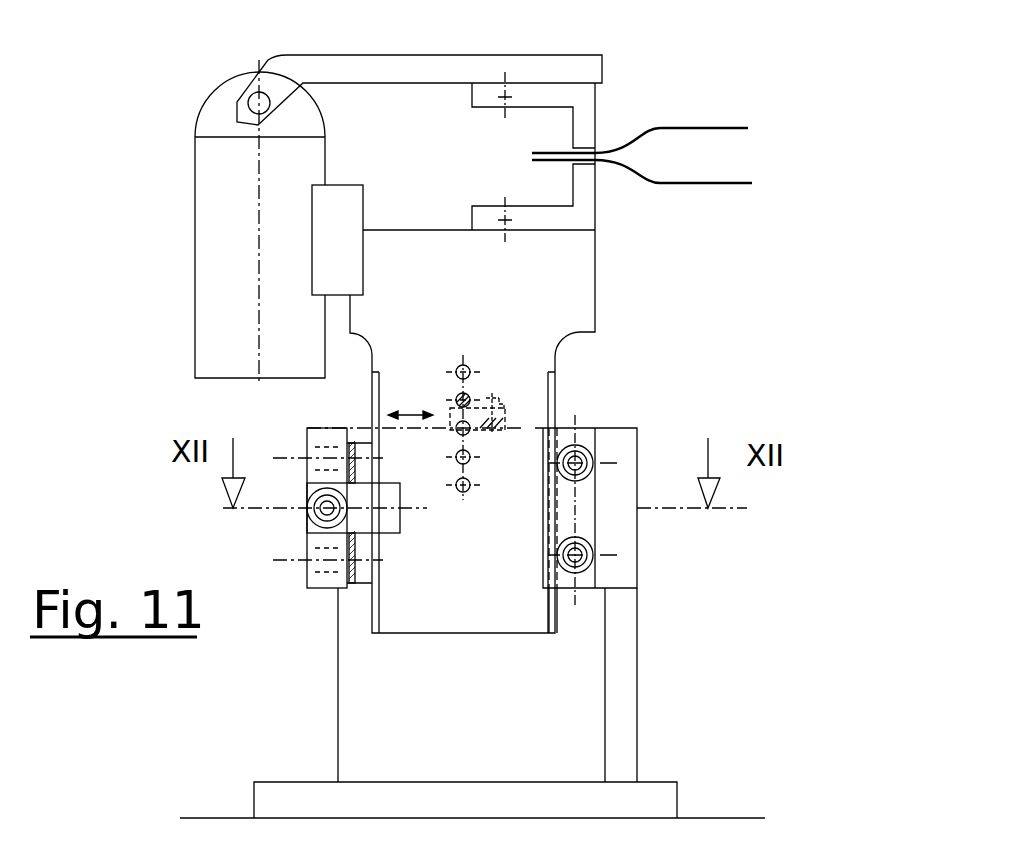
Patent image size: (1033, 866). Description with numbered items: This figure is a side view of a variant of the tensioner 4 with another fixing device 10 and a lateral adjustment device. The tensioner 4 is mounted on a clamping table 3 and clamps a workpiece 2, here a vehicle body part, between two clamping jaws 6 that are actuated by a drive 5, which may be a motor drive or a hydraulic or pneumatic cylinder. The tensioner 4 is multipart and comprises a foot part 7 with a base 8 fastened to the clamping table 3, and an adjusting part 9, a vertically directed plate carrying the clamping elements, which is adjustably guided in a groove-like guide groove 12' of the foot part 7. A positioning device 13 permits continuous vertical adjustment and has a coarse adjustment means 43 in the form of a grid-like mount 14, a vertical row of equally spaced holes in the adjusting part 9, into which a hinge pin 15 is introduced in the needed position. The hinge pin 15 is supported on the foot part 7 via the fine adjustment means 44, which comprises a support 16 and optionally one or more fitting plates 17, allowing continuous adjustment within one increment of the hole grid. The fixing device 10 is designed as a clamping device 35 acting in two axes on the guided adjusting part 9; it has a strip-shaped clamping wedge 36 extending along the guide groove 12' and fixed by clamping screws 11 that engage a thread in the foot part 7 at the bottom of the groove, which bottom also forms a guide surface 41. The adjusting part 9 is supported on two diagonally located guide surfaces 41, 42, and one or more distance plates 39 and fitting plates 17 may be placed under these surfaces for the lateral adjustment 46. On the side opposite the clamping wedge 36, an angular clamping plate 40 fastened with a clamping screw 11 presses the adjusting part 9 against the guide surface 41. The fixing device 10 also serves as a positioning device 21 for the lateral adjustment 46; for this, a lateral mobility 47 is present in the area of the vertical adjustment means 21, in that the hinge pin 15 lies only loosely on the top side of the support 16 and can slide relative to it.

The workpiece 2 is at (693, 150).
The clamping table 3 is at (236, 815).
The tensioner 4 is at (173, 138).
The drive 5 is at (218, 220).
The clamping jaws 6 is at (487, 213).
The foot part 7 is at (622, 746).
The base 8 is at (663, 800).
The adjusting part 9 is at (575, 260).
The fixing device 10 is at (698, 559).
The clamping screws 11 is at (613, 567).
The guide groove 12' is at (332, 685).
The positioning device 13 is at (558, 469).
The grid-like mount 14 is at (503, 555).
The hinge pin 15 is at (453, 390).
The support 16 is at (632, 395).
The fitting plate 17 is at (507, 425).
The positioning device 21 is at (504, 347).
The clamping device 35 is at (698, 559).
The clamping wedge 36 is at (583, 517).
The distance plate 39 is at (309, 541).
The clamping plate 40 is at (391, 522).
The guide surface 41 is at (397, 718).
The guide surface 42 is at (366, 567).
The coarse adjustment means 43 is at (492, 524).
The fine adjustment means 44 is at (503, 408).
The lateral adjustment 46 is at (698, 559).
The lateral mobility 47 is at (408, 412).